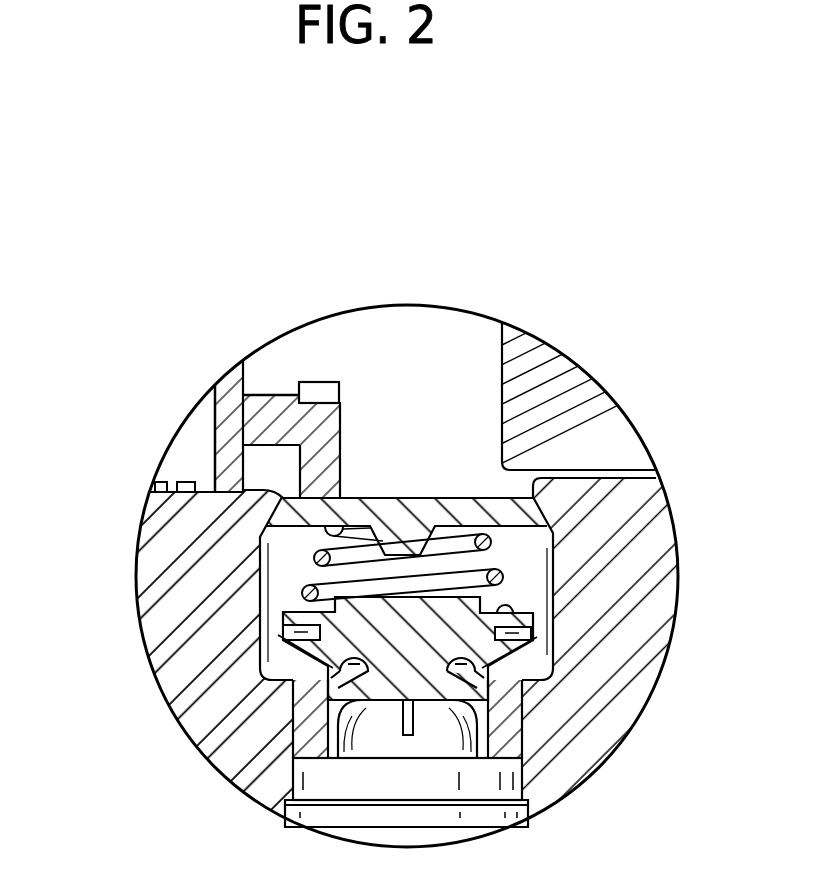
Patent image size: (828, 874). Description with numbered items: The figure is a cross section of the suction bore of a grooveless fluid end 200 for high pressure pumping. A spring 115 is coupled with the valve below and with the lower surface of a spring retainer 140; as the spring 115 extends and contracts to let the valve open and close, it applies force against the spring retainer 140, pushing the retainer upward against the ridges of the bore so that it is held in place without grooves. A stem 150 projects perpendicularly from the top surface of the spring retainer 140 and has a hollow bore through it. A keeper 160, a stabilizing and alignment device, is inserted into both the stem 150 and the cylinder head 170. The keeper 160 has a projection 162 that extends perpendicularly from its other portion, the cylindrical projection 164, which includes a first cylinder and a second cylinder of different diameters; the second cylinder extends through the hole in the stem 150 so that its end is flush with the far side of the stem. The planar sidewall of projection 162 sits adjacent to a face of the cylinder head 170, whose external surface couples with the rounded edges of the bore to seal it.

The grooveless fluid end 200 is at (240, 180).
The spring retainer 140 is at (424, 492).
The stem 150 is at (317, 389).
The keeper 160 is at (230, 417).
The projection 162 is at (257, 417).
The cylindrical projection 164 is at (266, 388).
The cylinder head 170 is at (193, 450).
The spring 115 is at (300, 561).